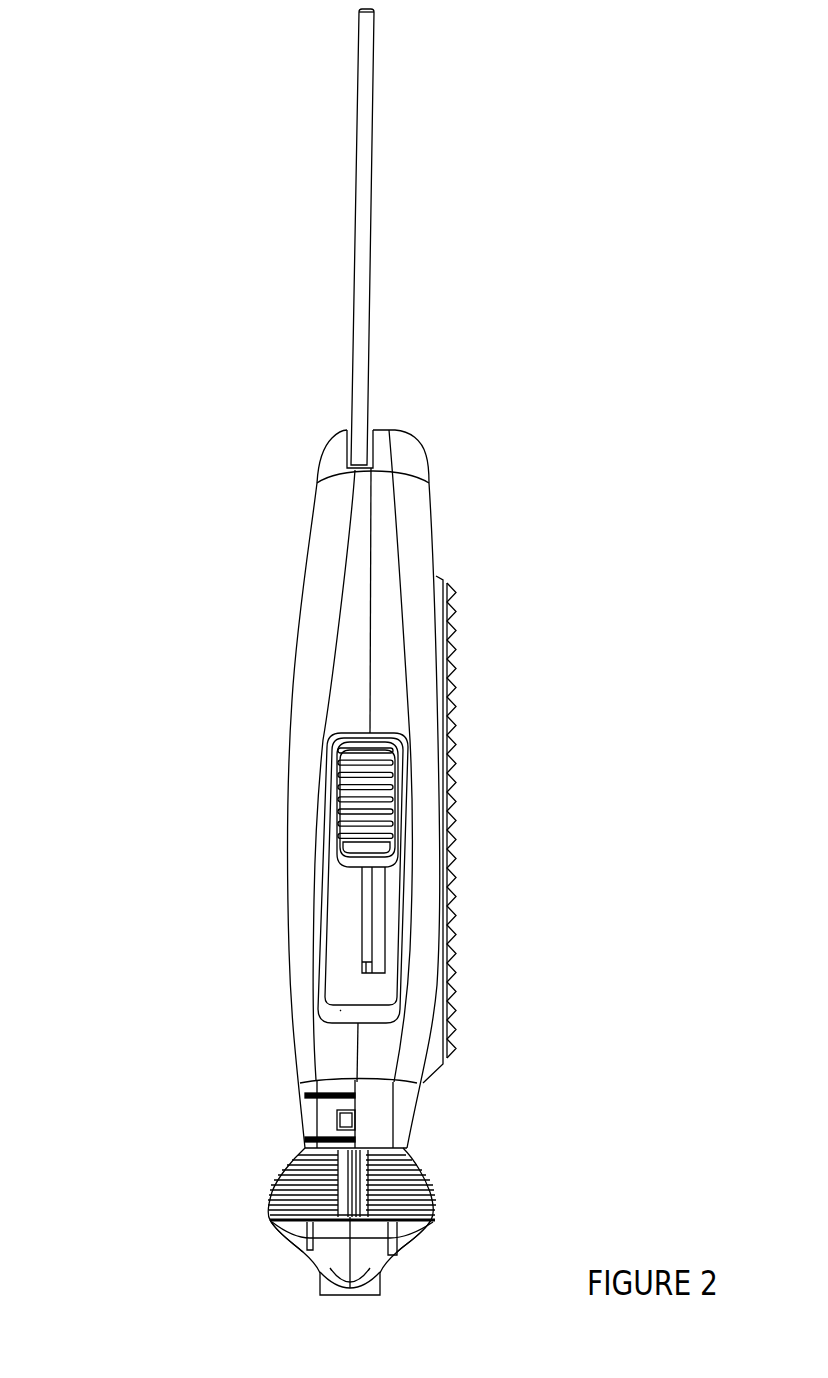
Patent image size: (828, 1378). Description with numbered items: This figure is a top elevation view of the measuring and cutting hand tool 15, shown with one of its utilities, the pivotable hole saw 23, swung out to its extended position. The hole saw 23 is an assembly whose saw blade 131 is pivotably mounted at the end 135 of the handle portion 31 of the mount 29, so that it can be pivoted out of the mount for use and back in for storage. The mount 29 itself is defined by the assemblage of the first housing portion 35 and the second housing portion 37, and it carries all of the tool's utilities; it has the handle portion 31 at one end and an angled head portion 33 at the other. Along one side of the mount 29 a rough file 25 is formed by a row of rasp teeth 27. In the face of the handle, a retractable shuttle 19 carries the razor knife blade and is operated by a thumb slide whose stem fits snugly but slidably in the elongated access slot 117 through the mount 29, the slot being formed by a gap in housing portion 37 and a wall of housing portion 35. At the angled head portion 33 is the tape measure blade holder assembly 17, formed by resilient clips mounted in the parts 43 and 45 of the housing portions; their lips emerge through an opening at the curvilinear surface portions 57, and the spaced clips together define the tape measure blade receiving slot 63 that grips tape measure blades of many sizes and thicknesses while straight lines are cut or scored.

The measuring and cutting hand tool 15 is at (172, 641).
The hole saw 23 is at (350, 285).
The saw blade 131 is at (366, 180).
The end 135 is at (333, 453).
The handle portion 31 is at (412, 437).
The second housing portion 37 is at (435, 512).
The first housing portion 35 is at (310, 533).
The rasp teeth 27 is at (457, 728).
The rough file 25 is at (450, 798).
The retractable shuttle 19 is at (343, 763).
The elongated access slot 117 is at (380, 883).
The mount 29 is at (290, 915).
The tape measure blade holder assembly 17 is at (357, 1172).
The curvilinear surface portions 57 is at (288, 1185).
The angled head portion 33 is at (437, 1220).
The part of first housing portion 43 is at (303, 1225).
The part of second housing portion 45 is at (388, 1267).
The tape measure blade receiving slot 63 is at (348, 1218).